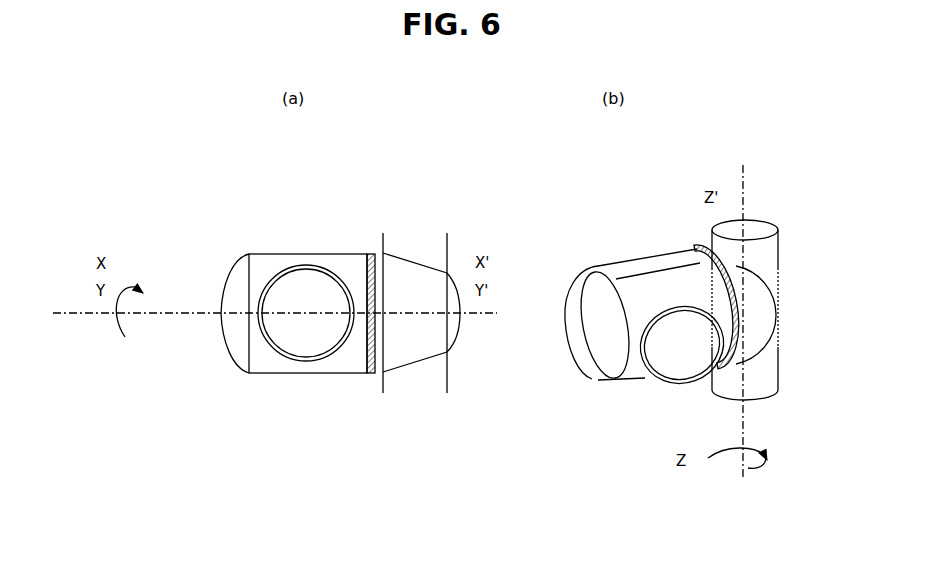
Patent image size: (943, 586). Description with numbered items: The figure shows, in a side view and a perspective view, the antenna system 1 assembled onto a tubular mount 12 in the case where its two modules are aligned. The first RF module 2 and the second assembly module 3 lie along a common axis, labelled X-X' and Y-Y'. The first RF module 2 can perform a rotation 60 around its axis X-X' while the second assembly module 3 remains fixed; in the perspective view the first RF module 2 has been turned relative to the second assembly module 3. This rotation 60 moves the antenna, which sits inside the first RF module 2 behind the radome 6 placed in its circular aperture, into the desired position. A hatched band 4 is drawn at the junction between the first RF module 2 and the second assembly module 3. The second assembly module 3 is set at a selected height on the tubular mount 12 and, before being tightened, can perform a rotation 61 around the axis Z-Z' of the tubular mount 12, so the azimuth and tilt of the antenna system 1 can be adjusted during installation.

The antenna system 1 is at (230, 243).
The first RF module 2 is at (227, 352).
The second assembly module 3 is at (458, 337).
The flange 4 is at (366, 374).
The radome 6 is at (285, 293).
The tubular mount 12 is at (420, 368).
The rotation 60 is at (125, 337).
The rotation 61 is at (765, 458).